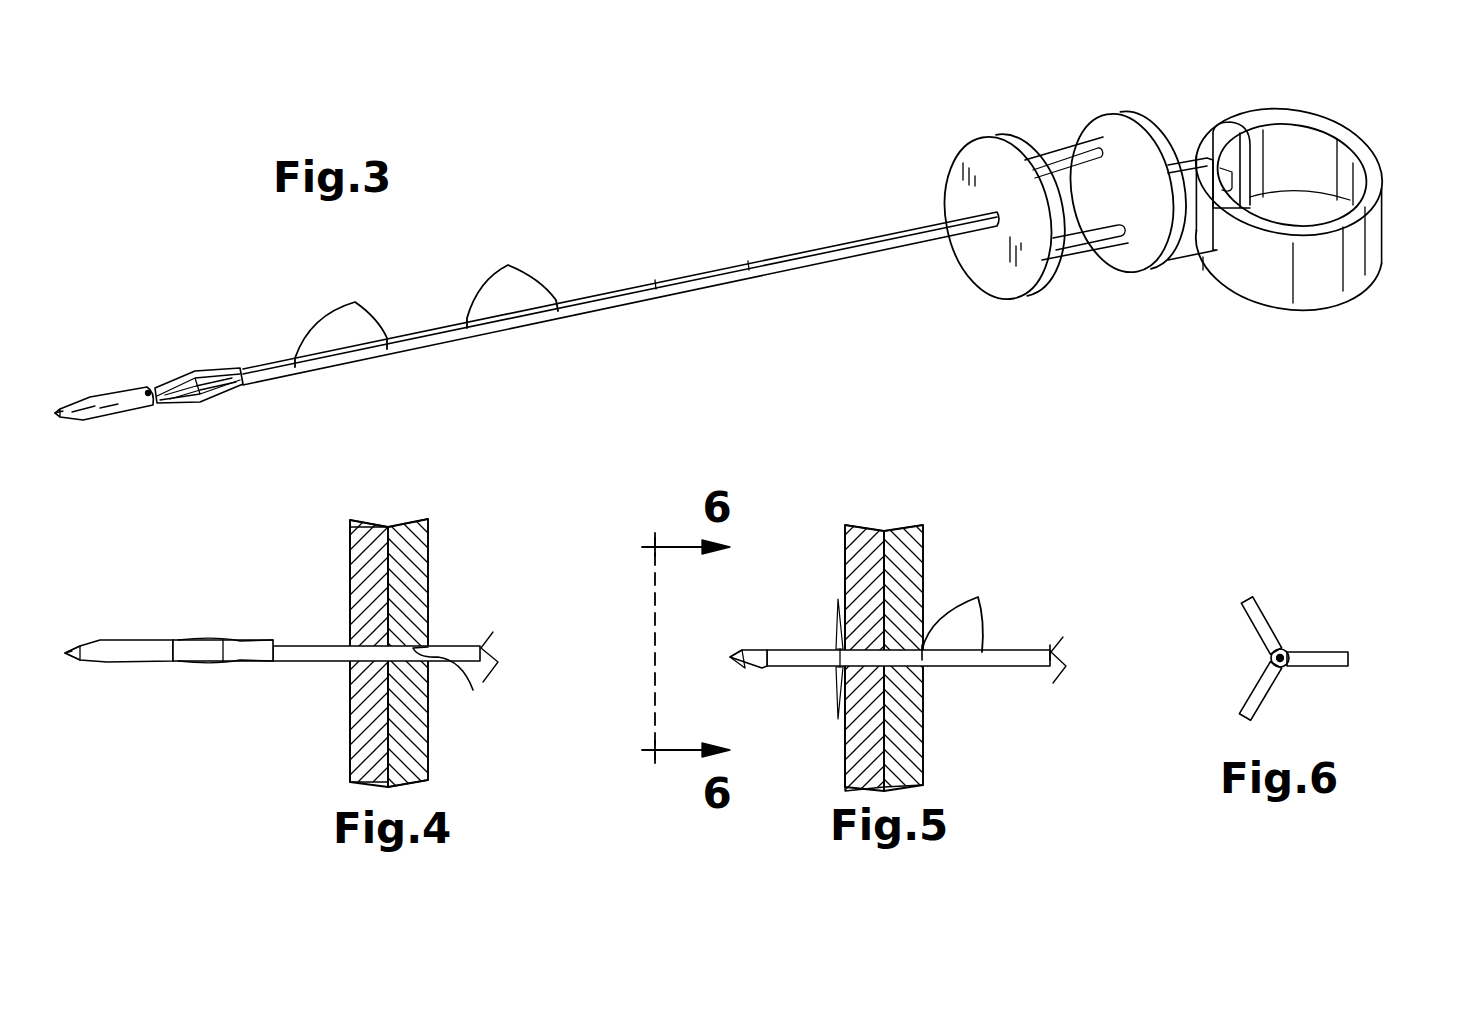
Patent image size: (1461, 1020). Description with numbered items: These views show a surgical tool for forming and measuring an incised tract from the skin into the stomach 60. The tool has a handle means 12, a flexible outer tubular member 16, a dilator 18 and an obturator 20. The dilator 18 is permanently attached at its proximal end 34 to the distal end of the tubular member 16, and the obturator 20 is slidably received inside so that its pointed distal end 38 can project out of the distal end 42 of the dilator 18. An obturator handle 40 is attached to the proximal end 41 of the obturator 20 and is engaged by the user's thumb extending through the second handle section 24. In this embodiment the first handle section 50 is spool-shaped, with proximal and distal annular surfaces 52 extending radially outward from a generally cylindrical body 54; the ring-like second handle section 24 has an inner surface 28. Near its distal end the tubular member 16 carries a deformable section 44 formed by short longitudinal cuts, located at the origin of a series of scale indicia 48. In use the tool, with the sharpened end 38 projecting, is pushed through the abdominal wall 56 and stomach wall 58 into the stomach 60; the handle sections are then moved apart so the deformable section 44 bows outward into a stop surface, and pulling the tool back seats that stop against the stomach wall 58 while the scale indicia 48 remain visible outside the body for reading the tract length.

In FIG. 3, the handle means 12 is at (1125, 382).
In FIG. 3, the flexible outer tubular member 16 is at (452, 327).
In FIG. 4, the flexible outer tubular member 16 is at (313, 663).
In FIG. 5, the flexible outer tubular member 16 is at (953, 667).
In FIG. 3, the dilator 18 is at (117, 397).
In FIG. 4, the dilator 18 is at (130, 637).
In FIG. 5, the dilator 18 is at (767, 652).
In FIG. 3, the obturator 20 is at (207, 393).
In FIG. 3, the second handle section 24 is at (1293, 112).
In FIG. 3, the inner surface of ring 28 is at (1350, 140).
In FIG. 3, the proximal end of the dilator 34 is at (151, 398).
In FIG. 4, the proximal end of the dilator 34 is at (143, 658).
In FIG. 3, the distal end of the obturator 38 is at (56, 410).
In FIG. 4, the distal end of the obturator 38 is at (67, 650).
In FIG. 5, the distal end of the obturator 38 is at (737, 651).
In FIG. 6, the distal end of the obturator 38 is at (1287, 663).
In FIG. 3, the obturator handle 40 is at (1232, 130).
In FIG. 3, the proximal end of the obturator 41 is at (1242, 203).
In FIG. 3, the distal end of the dilator 42 is at (73, 418).
In FIG. 4, the distal end of the dilator 42 is at (83, 657).
In FIG. 6, the distal end of the dilator 42 is at (1272, 658).
In FIG. 3, the deformable section 44 is at (208, 372).
In FIG. 4, the deformable section 44 is at (193, 650).
In FIG. 5, the deformable section 44 is at (840, 613).
In FIG. 6, the deformable section 44 is at (1322, 660).
In FIG. 3, the scale indicia 48 is at (426, 305).
In FIG. 4, the scale indicia 48 is at (452, 684).
In FIG. 5, the scale indicia 48 is at (986, 612).
In FIG. 3, the first handle section 50 is at (1053, 133).
In FIG. 3, the proximal and distal annular surfaces 52 is at (1140, 130).
In FIG. 3, the cylindrical body 54 is at (1077, 247).
In FIG. 4, the abdominal wall 56 is at (413, 560).
In FIG. 5, the abdominal wall 56 is at (907, 553).
In FIG. 4, the stomach wall 58 is at (367, 570).
In FIG. 5, the stomach wall 58 is at (853, 753).
In FIG. 4, the stomach 60 is at (197, 730).
In FIG. 5, the stomach 60 is at (703, 705).